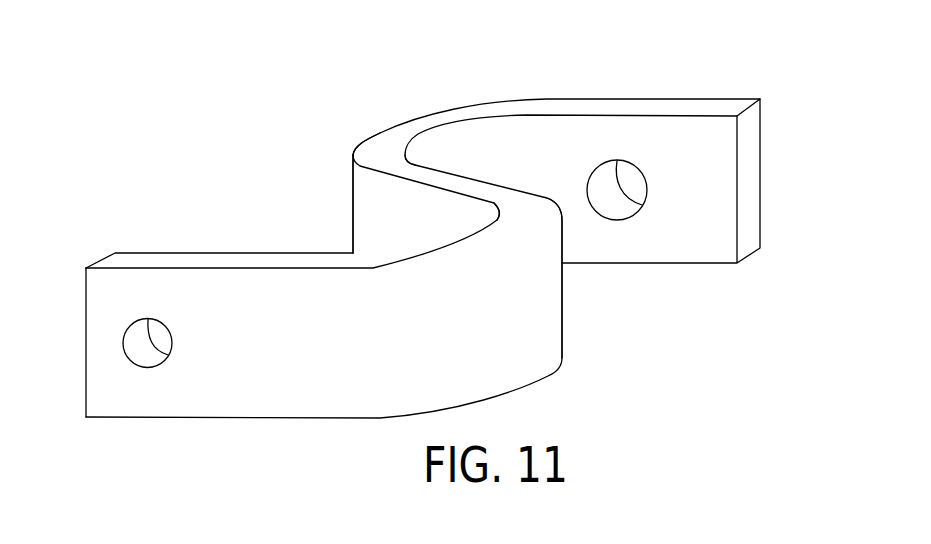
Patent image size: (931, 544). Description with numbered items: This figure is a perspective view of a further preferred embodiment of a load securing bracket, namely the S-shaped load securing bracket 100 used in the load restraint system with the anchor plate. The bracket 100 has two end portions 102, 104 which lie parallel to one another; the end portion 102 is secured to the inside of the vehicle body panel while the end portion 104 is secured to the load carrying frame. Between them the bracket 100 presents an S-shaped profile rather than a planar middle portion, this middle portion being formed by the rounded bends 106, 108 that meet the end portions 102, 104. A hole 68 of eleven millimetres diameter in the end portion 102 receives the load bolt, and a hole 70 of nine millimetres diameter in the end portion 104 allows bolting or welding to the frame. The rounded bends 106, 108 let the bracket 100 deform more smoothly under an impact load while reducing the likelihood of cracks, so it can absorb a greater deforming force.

The S-shaped load securing bracket 100 is at (737, 56).
The end portion 102 is at (712, 165).
The end portion 104 is at (198, 383).
The rounded bend 106 is at (357, 158).
The rounded bend 108 is at (543, 320).
The hole 68 is at (623, 192).
The hole 70 is at (142, 347).